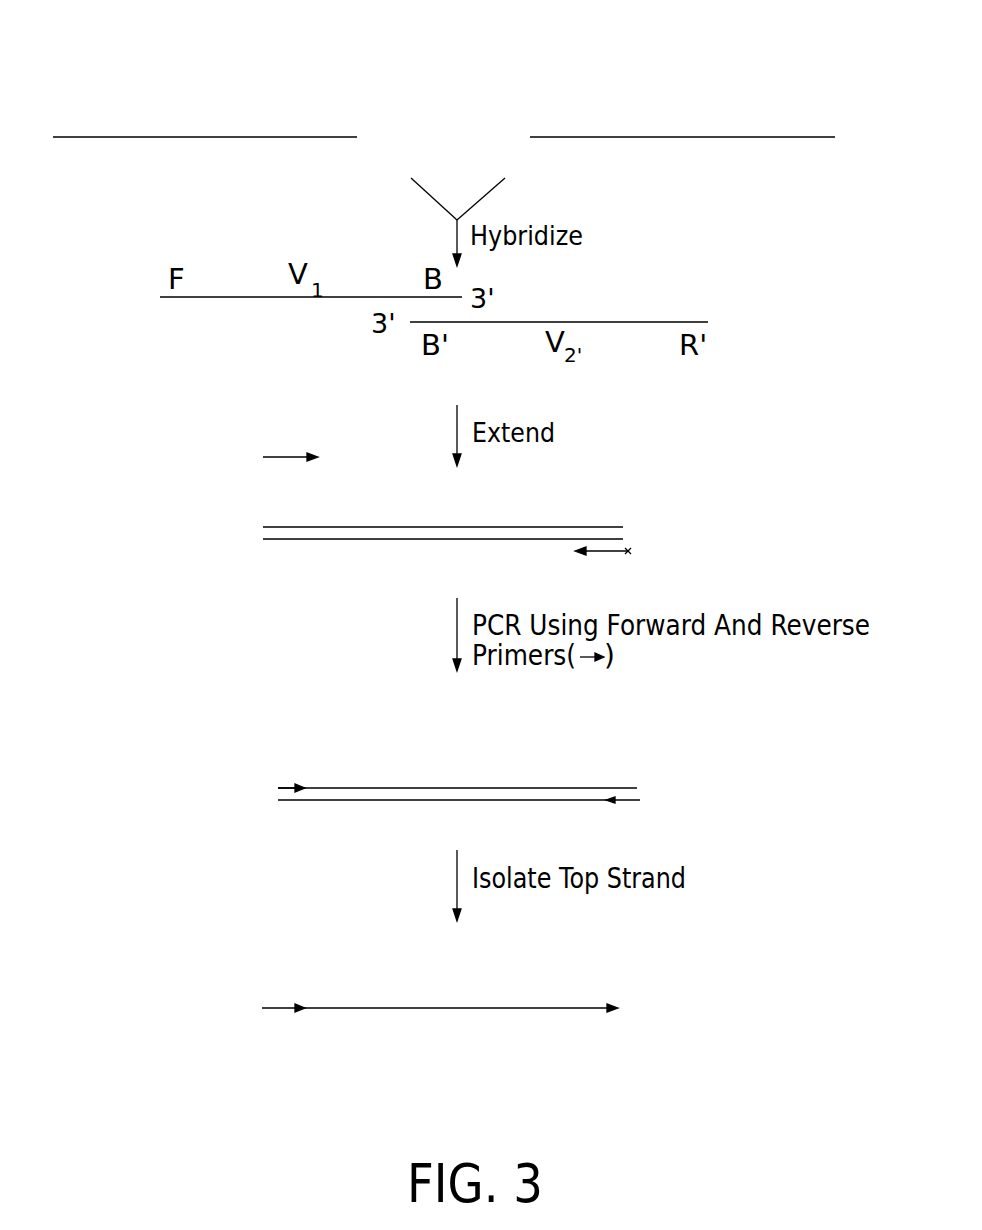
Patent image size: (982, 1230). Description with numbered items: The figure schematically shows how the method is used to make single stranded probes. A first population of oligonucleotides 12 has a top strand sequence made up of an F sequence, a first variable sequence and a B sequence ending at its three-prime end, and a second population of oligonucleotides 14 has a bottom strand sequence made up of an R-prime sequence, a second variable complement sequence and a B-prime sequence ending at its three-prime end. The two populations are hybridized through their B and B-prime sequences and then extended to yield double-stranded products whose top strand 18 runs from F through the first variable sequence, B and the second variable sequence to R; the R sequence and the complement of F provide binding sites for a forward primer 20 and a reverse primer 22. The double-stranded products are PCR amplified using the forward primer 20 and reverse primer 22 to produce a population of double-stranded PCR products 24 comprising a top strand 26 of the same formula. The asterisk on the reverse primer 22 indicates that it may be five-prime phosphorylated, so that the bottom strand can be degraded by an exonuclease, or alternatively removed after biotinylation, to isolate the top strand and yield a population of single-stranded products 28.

The first population of oligonucleotides 12 is at (256, 57).
The second population of oligonucleotides 14 is at (728, 54).
The top strand of double-stranded products 18 is at (580, 459).
The forward primer 20 is at (285, 455).
The reverse primer 22 is at (600, 553).
The population of double-stranded PCR products 24 is at (610, 739).
The top strand of PCR products 26 is at (283, 787).
The population of single-stranded products 28 is at (613, 959).